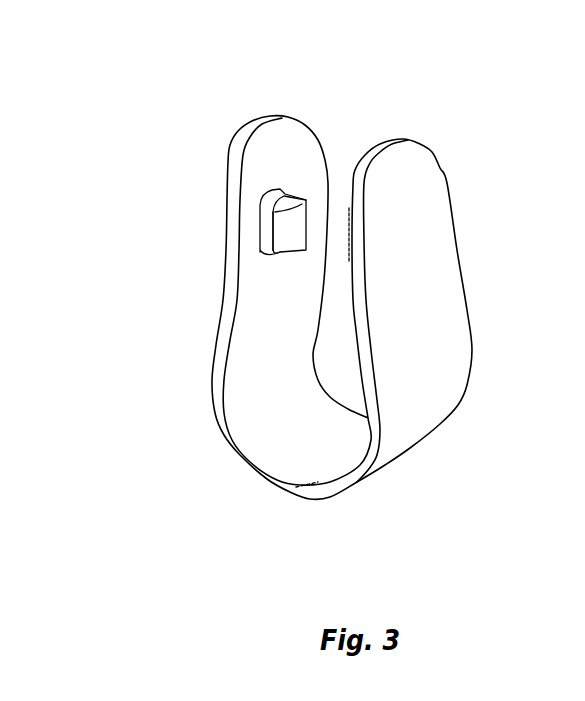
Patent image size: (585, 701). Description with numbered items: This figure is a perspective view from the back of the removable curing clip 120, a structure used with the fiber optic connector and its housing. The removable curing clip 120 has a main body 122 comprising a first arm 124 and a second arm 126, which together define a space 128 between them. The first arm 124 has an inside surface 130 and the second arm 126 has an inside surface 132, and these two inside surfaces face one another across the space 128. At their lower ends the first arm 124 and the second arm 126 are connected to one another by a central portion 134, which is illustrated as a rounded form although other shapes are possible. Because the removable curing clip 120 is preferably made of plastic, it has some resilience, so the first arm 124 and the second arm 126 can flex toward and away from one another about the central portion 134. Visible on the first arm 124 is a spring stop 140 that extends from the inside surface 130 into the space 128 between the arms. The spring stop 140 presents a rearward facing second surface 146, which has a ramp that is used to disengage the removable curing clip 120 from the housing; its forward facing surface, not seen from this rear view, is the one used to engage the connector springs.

The removable curing clip 120 is at (496, 268).
The main body 122 is at (410, 447).
The first arm 124 is at (316, 148).
The second arm 126 is at (438, 187).
The space 128 is at (274, 412).
The inside surface 130 is at (245, 316).
The inside surface 132 is at (353, 187).
The central portion 134 is at (322, 493).
The spring stop 140 is at (277, 190).
The second surface 146 is at (290, 222).